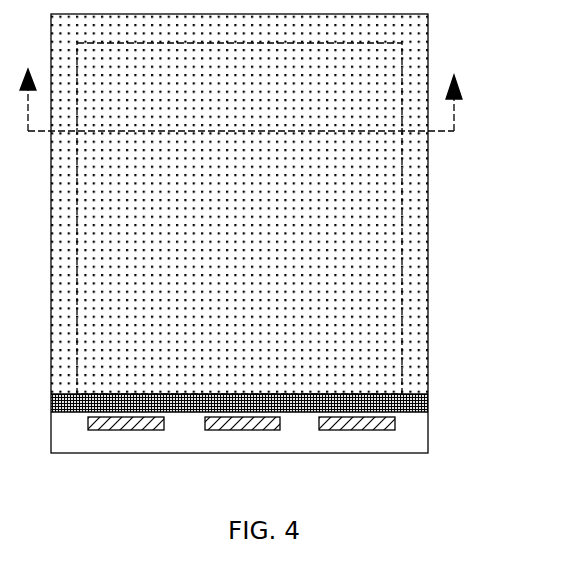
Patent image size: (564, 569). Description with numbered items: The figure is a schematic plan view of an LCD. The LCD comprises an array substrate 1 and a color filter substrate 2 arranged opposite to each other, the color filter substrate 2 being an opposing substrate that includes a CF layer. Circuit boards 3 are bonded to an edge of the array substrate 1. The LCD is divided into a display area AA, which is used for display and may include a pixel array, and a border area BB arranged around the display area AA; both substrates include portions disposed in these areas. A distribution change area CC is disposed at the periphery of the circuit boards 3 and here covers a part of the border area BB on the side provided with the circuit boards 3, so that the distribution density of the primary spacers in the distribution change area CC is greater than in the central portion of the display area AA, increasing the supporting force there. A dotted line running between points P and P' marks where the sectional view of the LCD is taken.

The array substrate 1 is at (428, 432).
The color filter substrate 2 is at (428, 332).
The circuit boards 3 is at (124, 430).
The display area AA is at (340, 162).
The border area BB is at (418, 234).
The distribution change area CC is at (77, 396).
The section line endpoint P is at (237, 87).
The section line endpoint P' is at (456, 90).